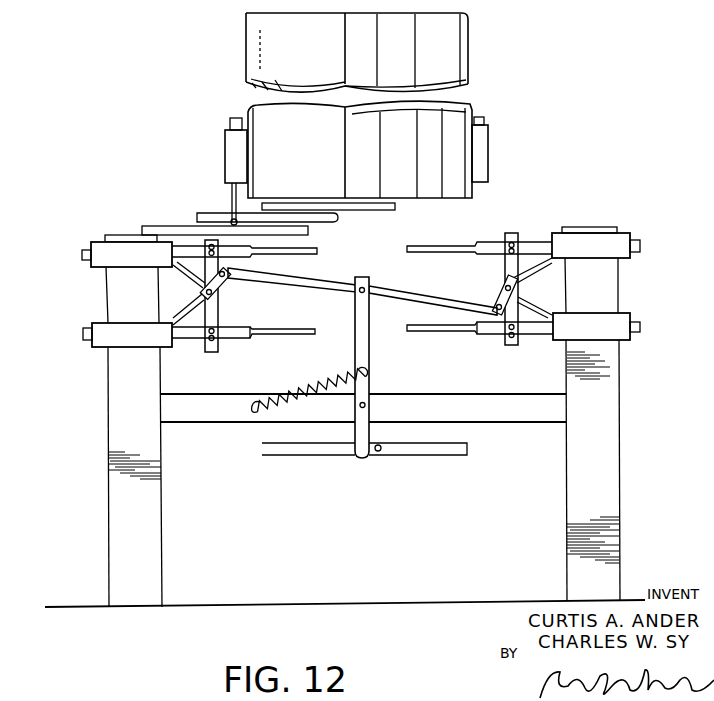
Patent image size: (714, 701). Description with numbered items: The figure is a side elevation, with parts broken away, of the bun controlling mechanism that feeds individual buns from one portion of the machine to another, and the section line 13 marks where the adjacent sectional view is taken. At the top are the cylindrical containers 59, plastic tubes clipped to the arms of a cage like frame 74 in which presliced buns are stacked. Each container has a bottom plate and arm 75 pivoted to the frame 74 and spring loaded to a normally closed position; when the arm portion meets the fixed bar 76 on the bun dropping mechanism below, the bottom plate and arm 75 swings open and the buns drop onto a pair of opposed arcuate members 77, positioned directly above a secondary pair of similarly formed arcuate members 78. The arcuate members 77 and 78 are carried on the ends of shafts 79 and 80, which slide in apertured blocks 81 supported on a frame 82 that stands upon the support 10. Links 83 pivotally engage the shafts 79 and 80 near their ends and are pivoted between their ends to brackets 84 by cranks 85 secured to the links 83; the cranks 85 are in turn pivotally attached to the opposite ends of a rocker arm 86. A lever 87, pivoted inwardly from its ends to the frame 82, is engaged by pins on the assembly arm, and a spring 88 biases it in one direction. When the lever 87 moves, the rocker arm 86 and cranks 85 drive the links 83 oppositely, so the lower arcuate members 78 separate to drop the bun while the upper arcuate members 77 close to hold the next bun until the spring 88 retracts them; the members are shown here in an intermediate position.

The support 10 is at (442, 600).
The section line 13- 13 is at (120, 175).
The cylindrical container 59 is at (460, 55).
The cage like frame 74 is at (227, 155).
The bottom plate and arm 75 is at (337, 214).
The fixed bar 76 is at (186, 228).
The arcuate members 77 is at (317, 253).
The arcuate members 78 is at (338, 336).
The shaft 79 is at (90, 262).
The shaft 80 is at (186, 337).
The apertured block 81 is at (98, 263).
The frame 82 is at (112, 487).
The link 83 is at (216, 315).
The bracket 84 is at (199, 283).
The crank 85 is at (223, 286).
The rocker arm 86 is at (381, 286).
The lever 87 is at (371, 386).
The spring 88 is at (336, 375).